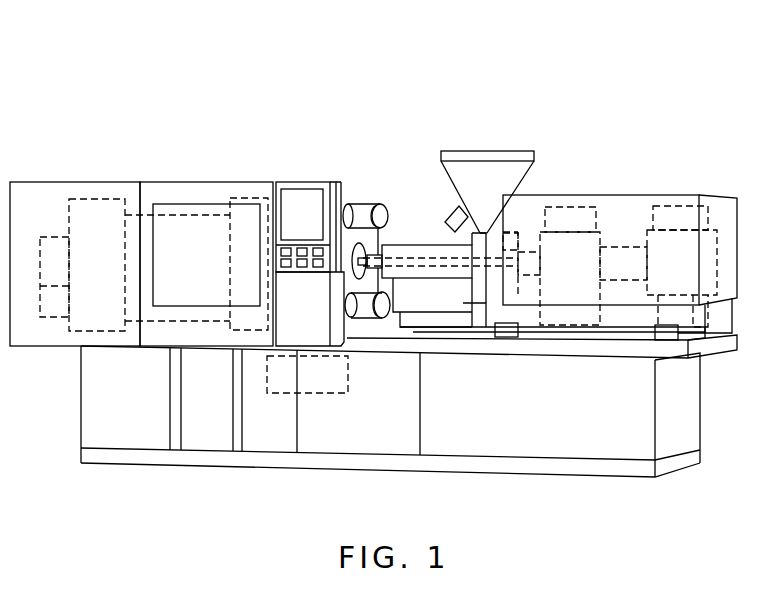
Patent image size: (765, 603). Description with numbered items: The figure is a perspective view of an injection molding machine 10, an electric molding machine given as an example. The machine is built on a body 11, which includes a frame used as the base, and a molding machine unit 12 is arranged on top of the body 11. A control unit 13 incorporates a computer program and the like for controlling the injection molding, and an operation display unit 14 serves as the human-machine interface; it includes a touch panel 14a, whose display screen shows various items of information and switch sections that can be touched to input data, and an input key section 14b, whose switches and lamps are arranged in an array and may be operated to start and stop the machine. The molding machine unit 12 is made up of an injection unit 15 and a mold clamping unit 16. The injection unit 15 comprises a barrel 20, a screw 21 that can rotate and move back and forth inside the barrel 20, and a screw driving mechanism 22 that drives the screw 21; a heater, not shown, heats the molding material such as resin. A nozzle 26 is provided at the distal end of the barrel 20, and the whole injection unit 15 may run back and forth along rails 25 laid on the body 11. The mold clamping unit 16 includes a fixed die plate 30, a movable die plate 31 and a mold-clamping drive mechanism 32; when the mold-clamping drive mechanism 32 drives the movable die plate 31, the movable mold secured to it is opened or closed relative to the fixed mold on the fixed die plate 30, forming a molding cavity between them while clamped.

The injection molding machine 10 is at (388, 128).
The body 11 is at (694, 404).
The molding machine unit 12 is at (598, 152).
The control unit 13 is at (321, 396).
The operation display unit 14 is at (318, 184).
The touch panel 14a is at (296, 189).
The input key section 14b is at (303, 268).
The injection unit 15 is at (665, 191).
The mold clamping unit 16 is at (178, 182).
The barrel 20 is at (425, 245).
The screw 21 is at (441, 263).
The screw driving mechanism 22 is at (598, 218).
The rails 25 is at (565, 336).
The nozzle 26 is at (373, 257).
The fixed die plate 30 is at (369, 202).
The movable die plate 31 is at (243, 197).
The mold-clamping drive mechanism 32 is at (100, 197).